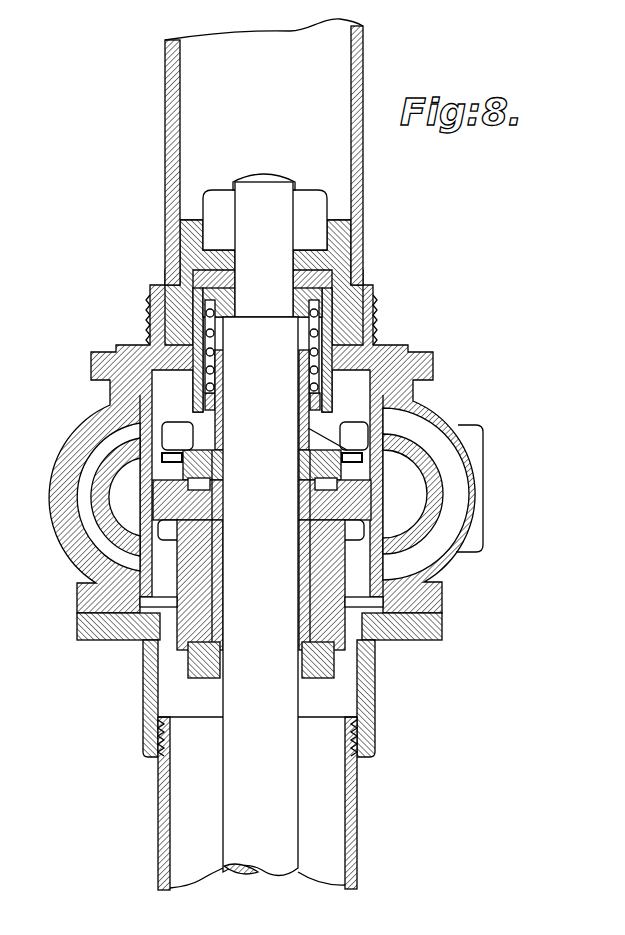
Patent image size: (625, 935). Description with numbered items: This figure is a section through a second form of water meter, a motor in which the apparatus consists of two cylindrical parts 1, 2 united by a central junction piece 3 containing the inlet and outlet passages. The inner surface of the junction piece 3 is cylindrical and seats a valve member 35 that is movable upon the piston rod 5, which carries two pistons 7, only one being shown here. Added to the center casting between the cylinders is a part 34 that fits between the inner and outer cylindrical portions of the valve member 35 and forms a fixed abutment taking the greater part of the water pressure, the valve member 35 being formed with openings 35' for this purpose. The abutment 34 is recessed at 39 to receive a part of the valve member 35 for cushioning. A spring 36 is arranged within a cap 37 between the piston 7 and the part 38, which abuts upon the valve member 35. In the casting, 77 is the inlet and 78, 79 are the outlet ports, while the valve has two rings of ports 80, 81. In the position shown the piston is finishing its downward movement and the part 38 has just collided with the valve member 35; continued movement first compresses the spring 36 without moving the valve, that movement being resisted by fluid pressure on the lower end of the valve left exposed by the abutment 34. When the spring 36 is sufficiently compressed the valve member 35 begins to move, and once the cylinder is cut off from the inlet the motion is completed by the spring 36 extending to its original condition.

The cylindrical part 1 is at (157, 803).
The cylindrical part 2 is at (166, 173).
The central junction piece 3 is at (90, 412).
The piston rod 5 is at (284, 767).
The piston 7 is at (180, 224).
The abutment part 34 is at (217, 597).
The valve member 35 is at (262, 453).
The openings 35' is at (244, 401).
The spring 36 is at (316, 307).
The cap 37 is at (362, 266).
The abutting part 38 is at (225, 375).
The recess 39 is at (192, 484).
The inlet 77 is at (267, 495).
The outlet port 78 is at (130, 557).
The outlet port 79 is at (132, 425).
The ring of ports 80 is at (261, 530).
The ring of ports 81 is at (265, 436).